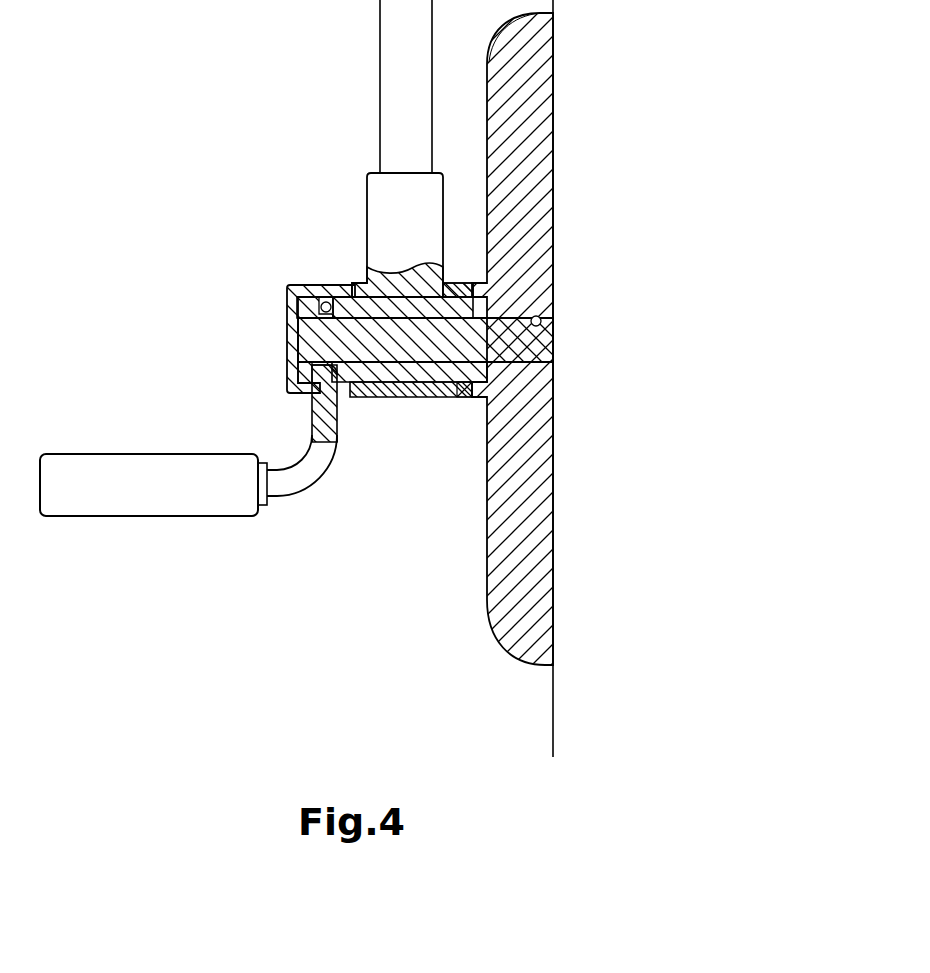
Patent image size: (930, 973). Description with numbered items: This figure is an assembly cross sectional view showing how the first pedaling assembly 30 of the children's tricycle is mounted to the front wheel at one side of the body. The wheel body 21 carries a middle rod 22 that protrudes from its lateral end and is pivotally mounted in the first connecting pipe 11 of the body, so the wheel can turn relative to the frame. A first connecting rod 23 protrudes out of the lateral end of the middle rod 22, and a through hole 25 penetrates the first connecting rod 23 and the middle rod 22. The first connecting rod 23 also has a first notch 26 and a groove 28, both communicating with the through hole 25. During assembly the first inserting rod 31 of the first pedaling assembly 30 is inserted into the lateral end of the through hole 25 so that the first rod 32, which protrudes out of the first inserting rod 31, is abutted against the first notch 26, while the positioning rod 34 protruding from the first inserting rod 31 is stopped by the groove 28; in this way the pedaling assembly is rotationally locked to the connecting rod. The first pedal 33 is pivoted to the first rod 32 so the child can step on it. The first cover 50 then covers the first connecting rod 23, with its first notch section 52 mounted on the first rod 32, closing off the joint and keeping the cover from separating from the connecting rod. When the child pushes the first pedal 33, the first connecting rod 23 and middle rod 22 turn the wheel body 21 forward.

The wheel body 21 is at (543, 122).
The first connecting rod 23 is at (337, 307).
The groove 28 is at (325, 307).
The positioning rod 34 is at (315, 308).
The through hole 25 is at (548, 312).
The first cover 50 is at (262, 347).
The first inserting rod 31 is at (542, 343).
The first notch section 52 is at (300, 398).
The middle rod 22 is at (432, 370).
The first connecting pipe 11 is at (430, 395).
The first notch 26 is at (328, 385).
The first rod 32 is at (320, 460).
The first pedal 33 is at (133, 503).
The first pedaling assembly 30 is at (258, 587).